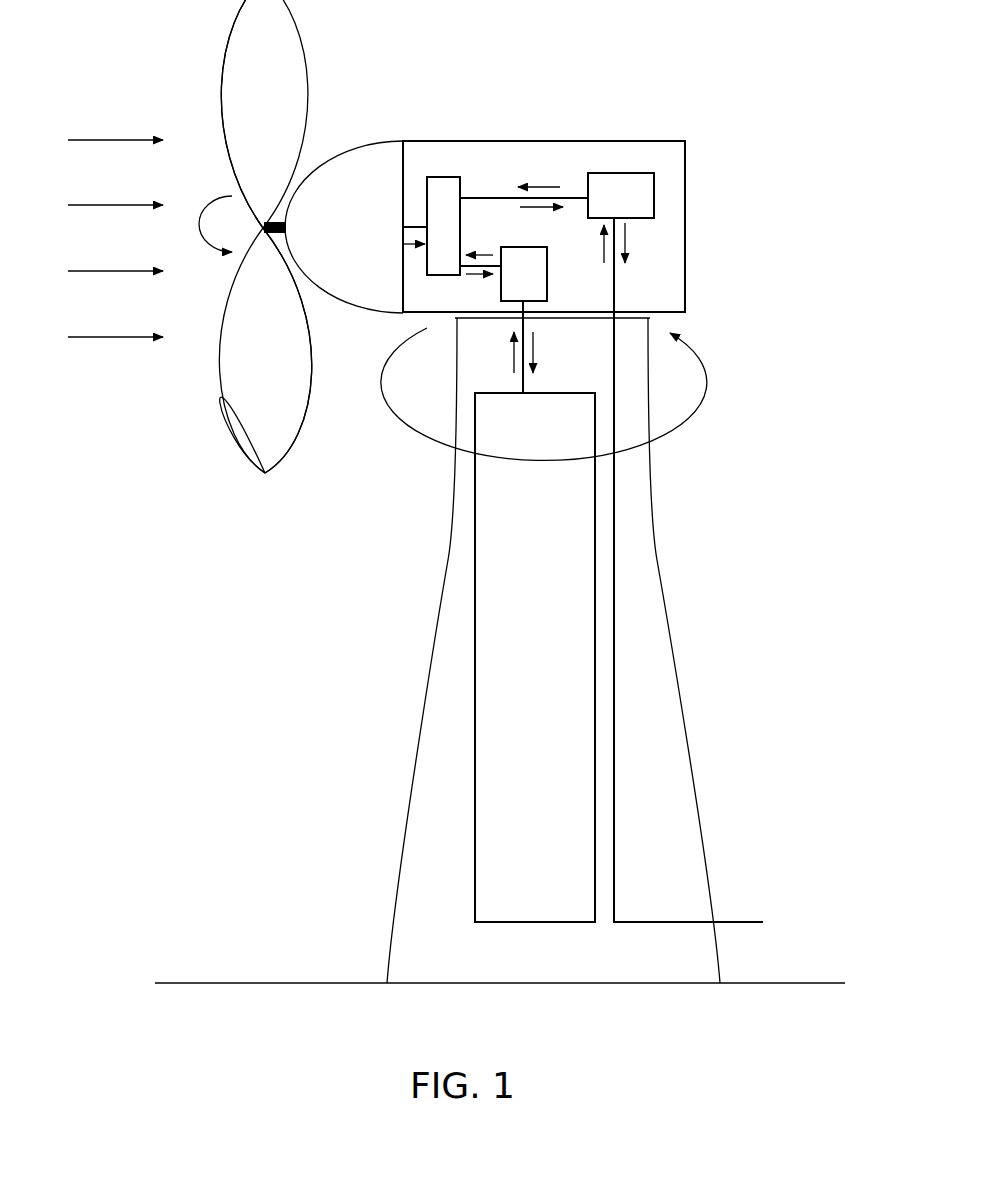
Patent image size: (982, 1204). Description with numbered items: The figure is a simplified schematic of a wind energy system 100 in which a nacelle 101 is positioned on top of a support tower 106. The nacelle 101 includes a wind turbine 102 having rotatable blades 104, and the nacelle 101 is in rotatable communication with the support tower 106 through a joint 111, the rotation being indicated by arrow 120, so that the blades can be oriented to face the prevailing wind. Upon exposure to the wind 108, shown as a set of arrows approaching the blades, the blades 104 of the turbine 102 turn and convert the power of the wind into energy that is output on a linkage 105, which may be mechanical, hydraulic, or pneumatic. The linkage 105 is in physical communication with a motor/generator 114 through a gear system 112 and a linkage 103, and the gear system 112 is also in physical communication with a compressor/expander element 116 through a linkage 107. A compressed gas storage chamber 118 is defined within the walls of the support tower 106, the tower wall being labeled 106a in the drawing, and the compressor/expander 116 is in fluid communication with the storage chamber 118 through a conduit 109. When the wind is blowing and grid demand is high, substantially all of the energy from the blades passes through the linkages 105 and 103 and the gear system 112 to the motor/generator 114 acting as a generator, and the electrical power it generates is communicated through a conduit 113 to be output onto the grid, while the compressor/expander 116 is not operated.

The system 100 is at (685, 63).
The nacelle 101 is at (500, 140).
The wind turbine 102 is at (293, 236).
The linkage 103 is at (480, 198).
The rotatable blades 104 is at (300, 97).
The linkage 105 is at (406, 227).
The support tower 106 is at (435, 620).
The tower wall 106a is at (445, 705).
The linkage 107 is at (463, 275).
The wind 108 is at (110, 132).
The conduit 109 is at (523, 322).
The joint 111 is at (640, 318).
The gear system 112 is at (449, 178).
The conduit 113 is at (614, 587).
The motor/generator 114 is at (650, 218).
The compressor/expander element 116 is at (547, 270).
The compressed gas storage chamber 118 is at (535, 657).
The arrow 120 is at (703, 400).